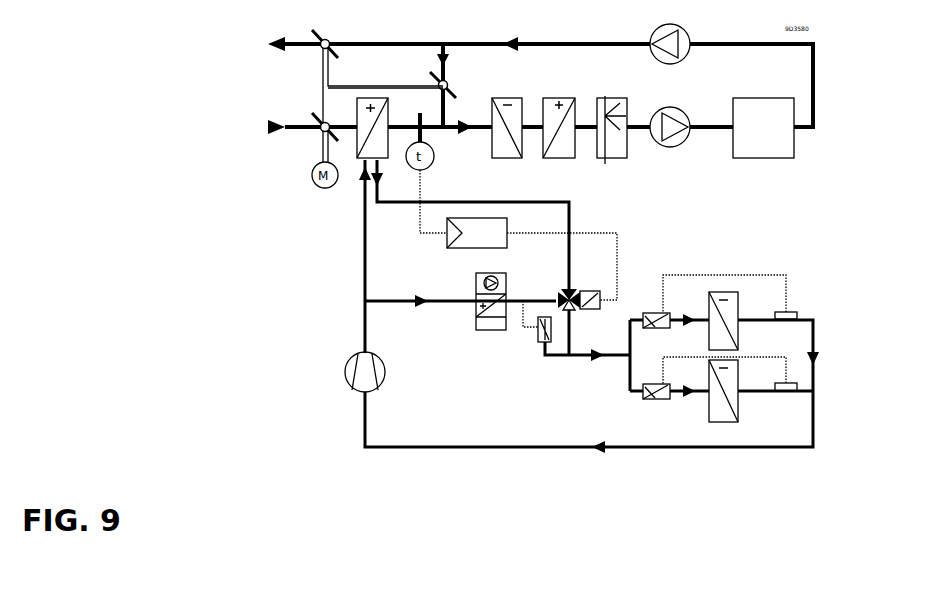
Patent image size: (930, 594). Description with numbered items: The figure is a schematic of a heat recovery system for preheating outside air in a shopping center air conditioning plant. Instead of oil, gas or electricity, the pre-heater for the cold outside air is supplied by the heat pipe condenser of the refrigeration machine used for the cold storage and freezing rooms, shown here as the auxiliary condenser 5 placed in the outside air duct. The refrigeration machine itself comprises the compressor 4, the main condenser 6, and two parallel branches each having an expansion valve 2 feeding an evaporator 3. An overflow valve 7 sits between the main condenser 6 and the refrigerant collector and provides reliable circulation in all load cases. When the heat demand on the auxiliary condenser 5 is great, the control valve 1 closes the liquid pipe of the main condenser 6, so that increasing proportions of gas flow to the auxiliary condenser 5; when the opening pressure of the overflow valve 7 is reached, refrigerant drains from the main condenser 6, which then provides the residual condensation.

The control valve 1 is at (579, 293).
The expansion valve 2 is at (656, 359).
The evaporator 3 is at (753, 358).
The compressor 4 is at (370, 372).
The auxiliary condenser 5 is at (378, 128).
The main condenser 6 is at (489, 321).
The overflow valve 7 is at (549, 329).